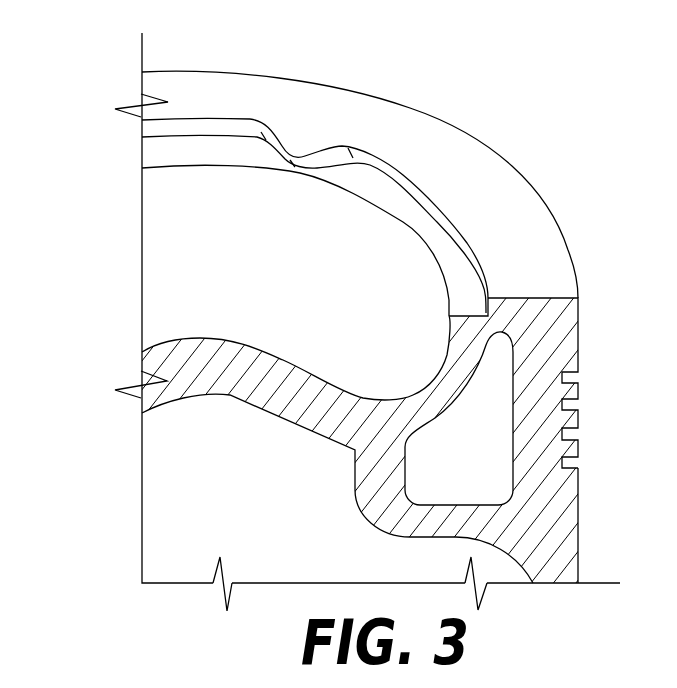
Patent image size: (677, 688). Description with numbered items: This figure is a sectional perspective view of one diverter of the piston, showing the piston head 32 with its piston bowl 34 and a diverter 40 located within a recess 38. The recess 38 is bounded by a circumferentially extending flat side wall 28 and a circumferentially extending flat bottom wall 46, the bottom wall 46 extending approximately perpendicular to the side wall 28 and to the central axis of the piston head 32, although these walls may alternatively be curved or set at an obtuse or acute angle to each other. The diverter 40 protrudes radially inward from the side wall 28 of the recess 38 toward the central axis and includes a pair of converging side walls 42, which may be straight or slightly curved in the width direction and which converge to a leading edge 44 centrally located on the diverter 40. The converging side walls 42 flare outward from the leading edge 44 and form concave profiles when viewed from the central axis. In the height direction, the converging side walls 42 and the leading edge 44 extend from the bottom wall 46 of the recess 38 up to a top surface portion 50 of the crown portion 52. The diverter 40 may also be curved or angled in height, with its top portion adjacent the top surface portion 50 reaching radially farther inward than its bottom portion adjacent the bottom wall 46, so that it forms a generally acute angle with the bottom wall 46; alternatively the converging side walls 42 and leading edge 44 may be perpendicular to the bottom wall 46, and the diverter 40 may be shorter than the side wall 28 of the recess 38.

The side wall 28 is at (442, 208).
The piston head 32 is at (569, 341).
The piston bowl 34 is at (197, 336).
The recess 38 is at (152, 151).
The diverter 40 is at (270, 208).
The converging side walls 42 is at (273, 150).
The leading edge 44 is at (295, 188).
The bottom wall 46 is at (462, 309).
The top surface portion 50 is at (298, 140).
The crown portion 52 is at (245, 90).